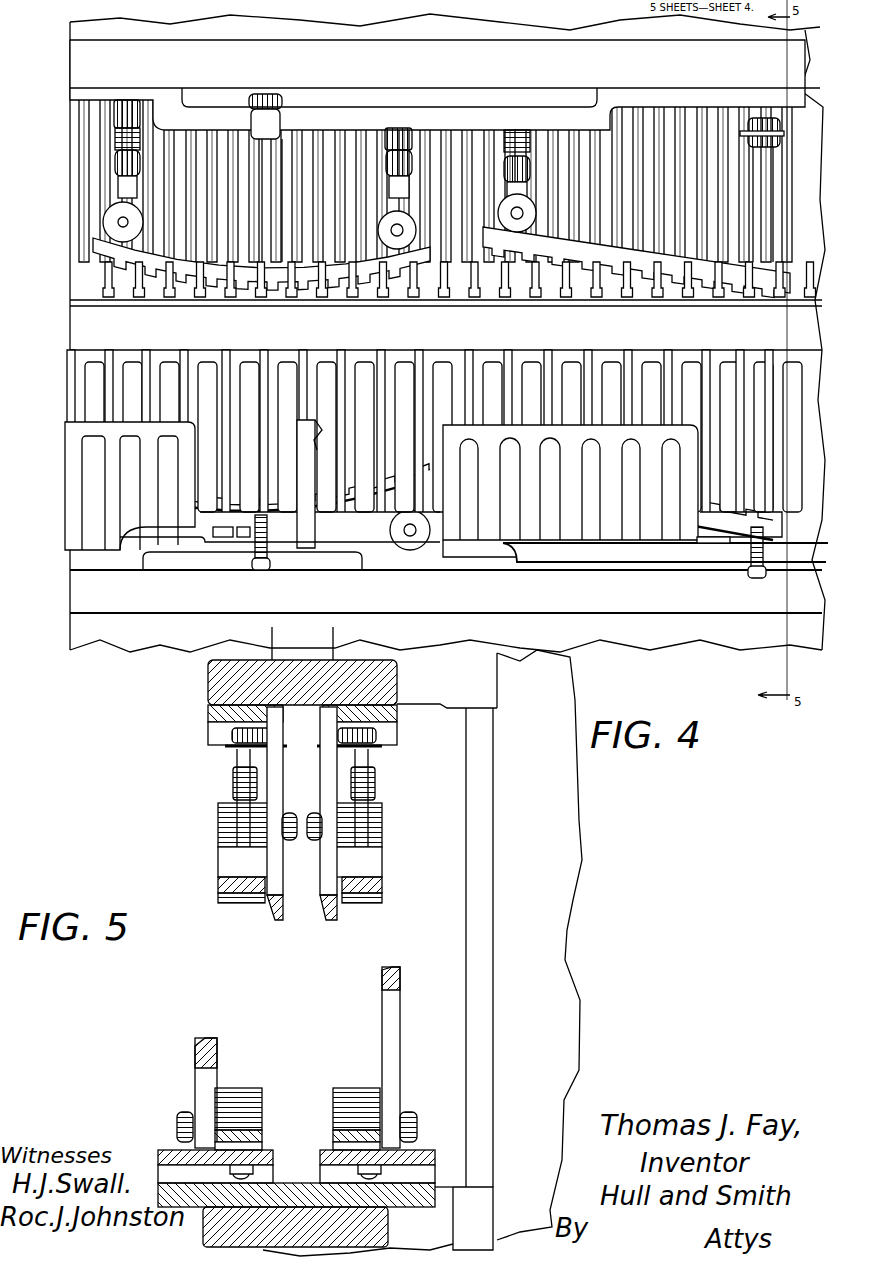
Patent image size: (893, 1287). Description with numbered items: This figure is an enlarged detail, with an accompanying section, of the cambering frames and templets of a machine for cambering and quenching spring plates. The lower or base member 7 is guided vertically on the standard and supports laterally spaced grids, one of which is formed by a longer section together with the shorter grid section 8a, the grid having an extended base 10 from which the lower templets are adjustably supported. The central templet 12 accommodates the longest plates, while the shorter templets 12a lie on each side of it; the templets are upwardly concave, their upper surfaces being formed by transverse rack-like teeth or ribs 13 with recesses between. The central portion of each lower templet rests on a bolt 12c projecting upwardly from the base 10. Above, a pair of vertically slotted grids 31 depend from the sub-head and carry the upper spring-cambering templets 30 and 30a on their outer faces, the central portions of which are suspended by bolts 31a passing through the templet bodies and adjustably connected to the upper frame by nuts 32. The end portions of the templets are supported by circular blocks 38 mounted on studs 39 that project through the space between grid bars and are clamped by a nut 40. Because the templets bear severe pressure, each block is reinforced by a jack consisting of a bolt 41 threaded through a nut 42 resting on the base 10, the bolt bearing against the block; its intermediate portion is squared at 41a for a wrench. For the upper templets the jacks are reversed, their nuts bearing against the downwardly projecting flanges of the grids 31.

In FIG. 4, the base member 7 is at (77, 600).
In FIG. 5, the base member 7 is at (388, 1224).
In FIG. 4, the grid section 8a is at (75, 505).
In FIG. 5, the grid section 8a is at (215, 1070).
In FIG. 4, the base 10 is at (170, 558).
In FIG. 4, the templet 12 is at (672, 548).
In FIG. 5, the templet 12 is at (340, 1115).
In FIG. 4, the templet 12a is at (245, 540).
In FIG. 4, the bolt 12c is at (270, 565).
In FIG. 5, the bolt 12c is at (345, 1172).
In FIG. 4, the transverse teeth or ribs 13 is at (357, 494).
In FIG. 4, the upper spring-cambering templet 30 is at (718, 280).
In FIG. 5, the upper spring-cambering templet 30 is at (243, 897).
In FIG. 4, the upper spring-cambering templet 30a is at (250, 275).
In FIG. 4, the grid 31 is at (490, 362).
In FIG. 5, the grid 31 is at (323, 905).
In FIG. 4, the bolt 31a is at (275, 160).
In FIG. 5, the bolt 31a is at (372, 795).
In FIG. 4, the nut 32 is at (266, 95).
In FIG. 5, the nut 32 is at (380, 737).
In FIG. 4, the block 38 is at (112, 222).
In FIG. 5, the block 38 is at (225, 822).
In FIG. 4, the stud 39 is at (397, 250).
In FIG. 5, the stud 39 is at (312, 812).
In FIG. 5, the nut 40 is at (316, 845).
In FIG. 4, the bolt 41 is at (115, 140).
In FIG. 5, the bolt 41 is at (233, 755).
In FIG. 4, the squared portion 41a is at (118, 168).
In FIG. 4, the nut 42 is at (127, 115).